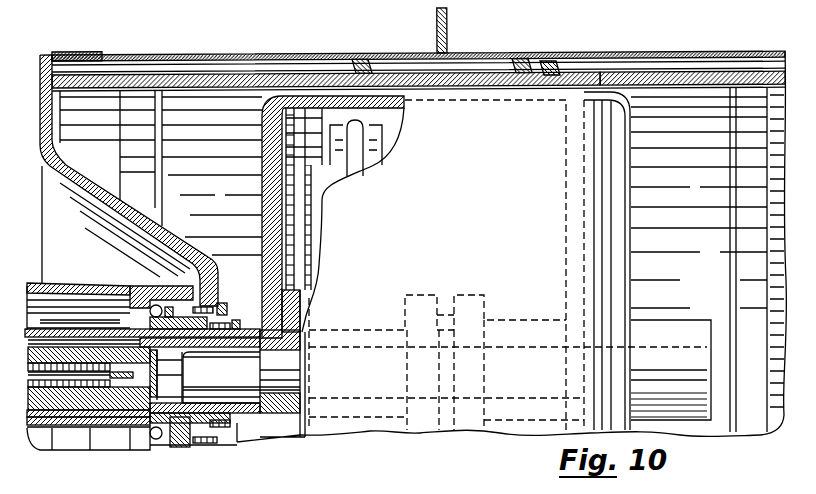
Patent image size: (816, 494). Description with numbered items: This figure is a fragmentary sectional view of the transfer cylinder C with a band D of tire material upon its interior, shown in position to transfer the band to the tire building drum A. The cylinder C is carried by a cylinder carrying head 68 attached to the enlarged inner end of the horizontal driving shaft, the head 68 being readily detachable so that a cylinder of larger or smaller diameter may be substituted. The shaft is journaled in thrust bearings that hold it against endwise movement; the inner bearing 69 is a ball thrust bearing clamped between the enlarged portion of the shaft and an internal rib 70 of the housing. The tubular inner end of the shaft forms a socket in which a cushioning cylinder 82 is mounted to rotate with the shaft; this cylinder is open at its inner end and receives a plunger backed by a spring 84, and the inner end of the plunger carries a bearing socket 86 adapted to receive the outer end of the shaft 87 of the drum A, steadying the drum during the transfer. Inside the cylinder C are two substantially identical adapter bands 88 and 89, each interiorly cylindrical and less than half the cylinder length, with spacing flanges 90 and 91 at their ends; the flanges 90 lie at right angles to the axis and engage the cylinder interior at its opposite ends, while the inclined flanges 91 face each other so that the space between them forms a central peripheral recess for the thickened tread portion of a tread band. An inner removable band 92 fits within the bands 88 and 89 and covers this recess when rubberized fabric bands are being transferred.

The cylinder carrying head 68 is at (58, 183).
The inner bearing 69 is at (156, 448).
The internal rib 70 is at (130, 283).
The cushioning cylinder 82 is at (51, 433).
The spring 84 is at (90, 433).
The bearing socket 86 is at (200, 445).
The shaft of the drum 87 is at (247, 358).
The adapter band 88 is at (243, 76).
The adapter band 89 is at (628, 74).
The spacing flange 90 is at (85, 53).
The spacing flange 91 is at (352, 61).
The inner removable band 92 is at (480, 78).
The tire building drum A is at (258, 198).
The transfer cylinder C is at (750, 53).
The band D is at (546, 77).